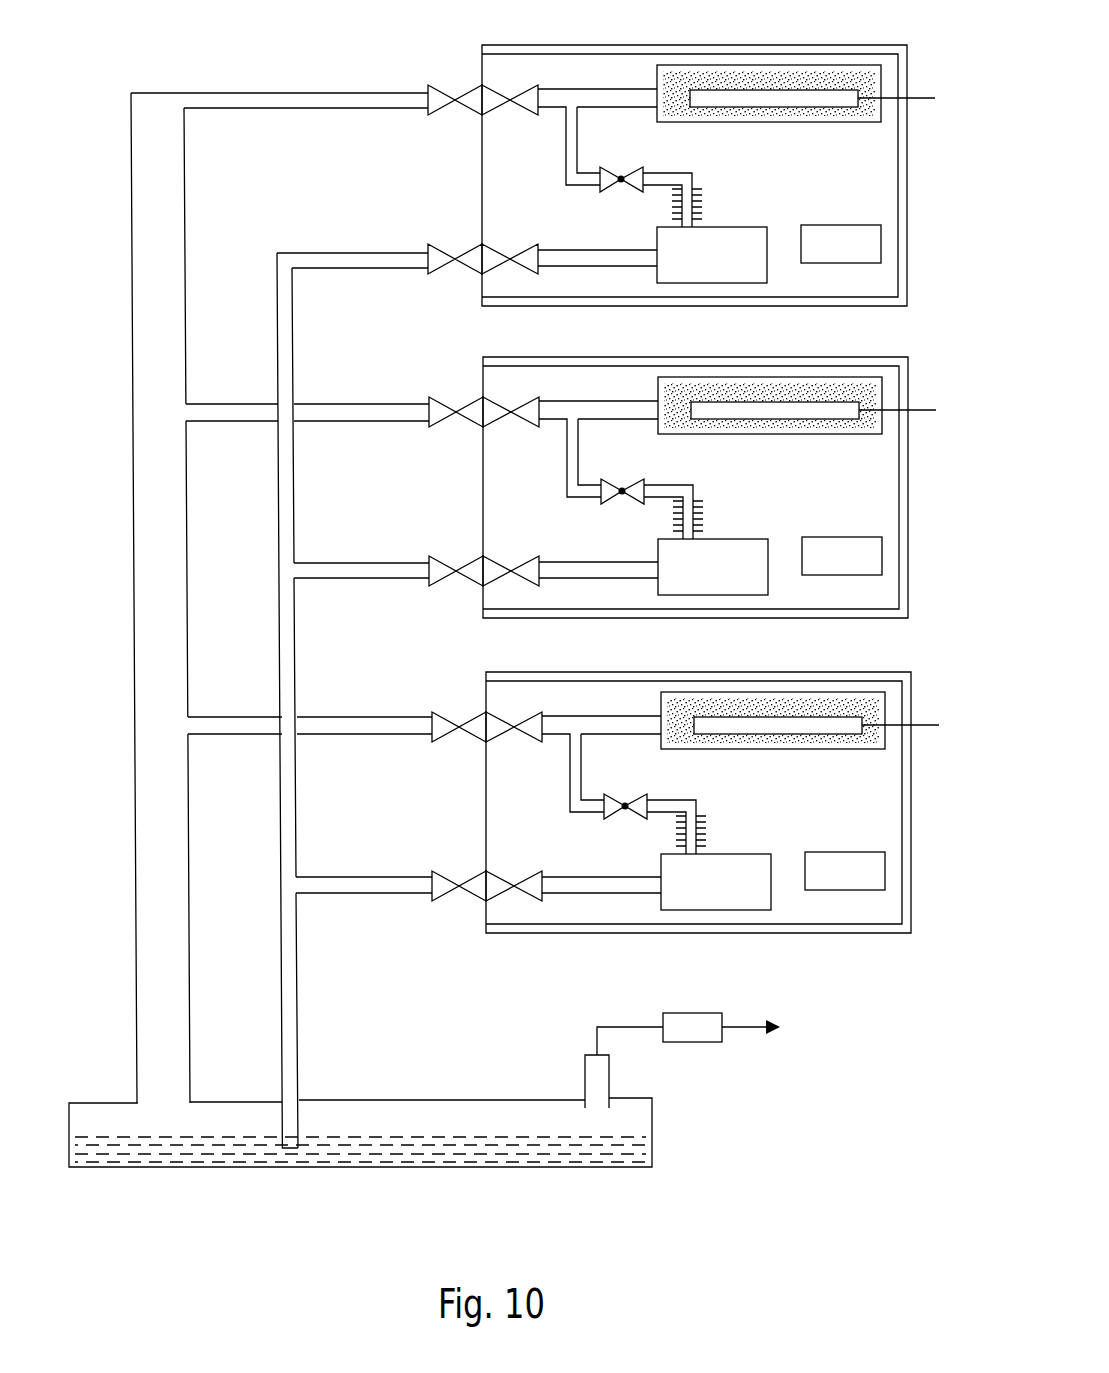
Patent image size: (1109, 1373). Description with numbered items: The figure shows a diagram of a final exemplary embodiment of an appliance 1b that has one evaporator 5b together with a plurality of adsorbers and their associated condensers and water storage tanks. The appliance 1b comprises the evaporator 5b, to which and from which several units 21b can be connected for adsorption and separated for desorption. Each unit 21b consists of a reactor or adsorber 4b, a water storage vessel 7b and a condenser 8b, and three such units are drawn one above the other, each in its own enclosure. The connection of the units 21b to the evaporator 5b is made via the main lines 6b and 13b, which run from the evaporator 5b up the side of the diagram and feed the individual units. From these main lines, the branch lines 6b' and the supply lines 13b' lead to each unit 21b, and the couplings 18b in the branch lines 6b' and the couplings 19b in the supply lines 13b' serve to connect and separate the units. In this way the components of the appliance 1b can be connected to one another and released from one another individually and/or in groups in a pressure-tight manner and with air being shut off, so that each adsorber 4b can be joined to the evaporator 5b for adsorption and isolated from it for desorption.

The appliance 1b is at (114, 165).
The reactor or adsorber 4b is at (758, 80).
The evaporator 5b is at (403, 1167).
The main line 6b is at (246, 598).
The branch line 6b' is at (279, 65).
The water storage vessel 7b is at (728, 238).
The condenser 8b is at (698, 187).
The main line 13b is at (316, 700).
The supply line 13b' is at (352, 224).
The coupling 18b is at (464, 98).
The coupling 19b is at (464, 257).
The unit 21b is at (760, 237).